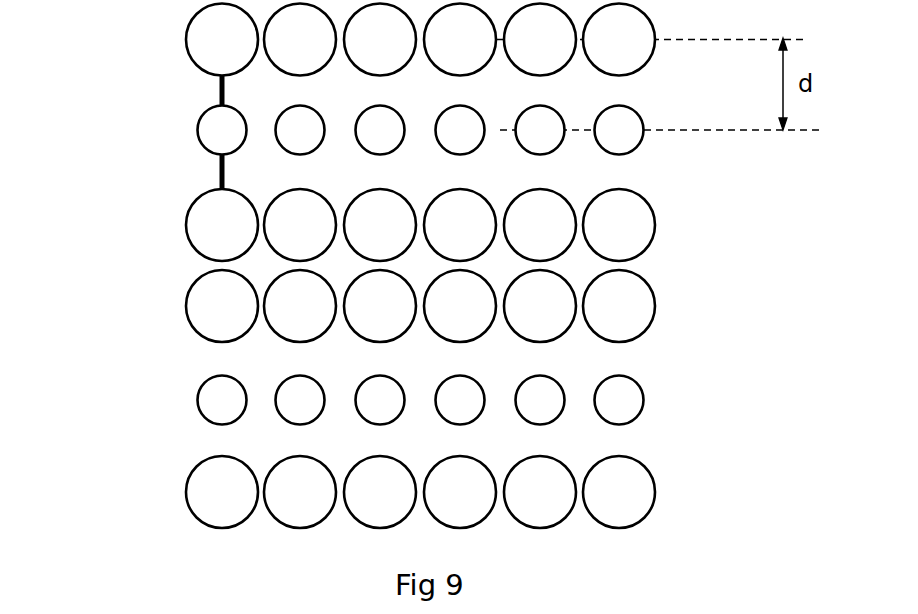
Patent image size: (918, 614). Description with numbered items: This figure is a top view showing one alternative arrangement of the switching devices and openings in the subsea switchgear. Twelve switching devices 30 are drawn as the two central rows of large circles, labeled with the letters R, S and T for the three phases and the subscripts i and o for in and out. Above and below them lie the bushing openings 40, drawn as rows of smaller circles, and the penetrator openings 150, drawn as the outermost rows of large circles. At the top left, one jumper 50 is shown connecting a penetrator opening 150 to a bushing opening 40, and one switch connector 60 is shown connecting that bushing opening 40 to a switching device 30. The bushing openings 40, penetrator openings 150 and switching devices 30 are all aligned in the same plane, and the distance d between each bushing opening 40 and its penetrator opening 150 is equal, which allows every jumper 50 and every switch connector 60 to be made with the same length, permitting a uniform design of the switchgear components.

The penetrator opening 150 is at (188, 48).
The jumper 50 is at (198, 93).
The bushing opening 40 is at (197, 133).
The switch connector 60 is at (200, 168).
The switching device 30 is at (193, 250).